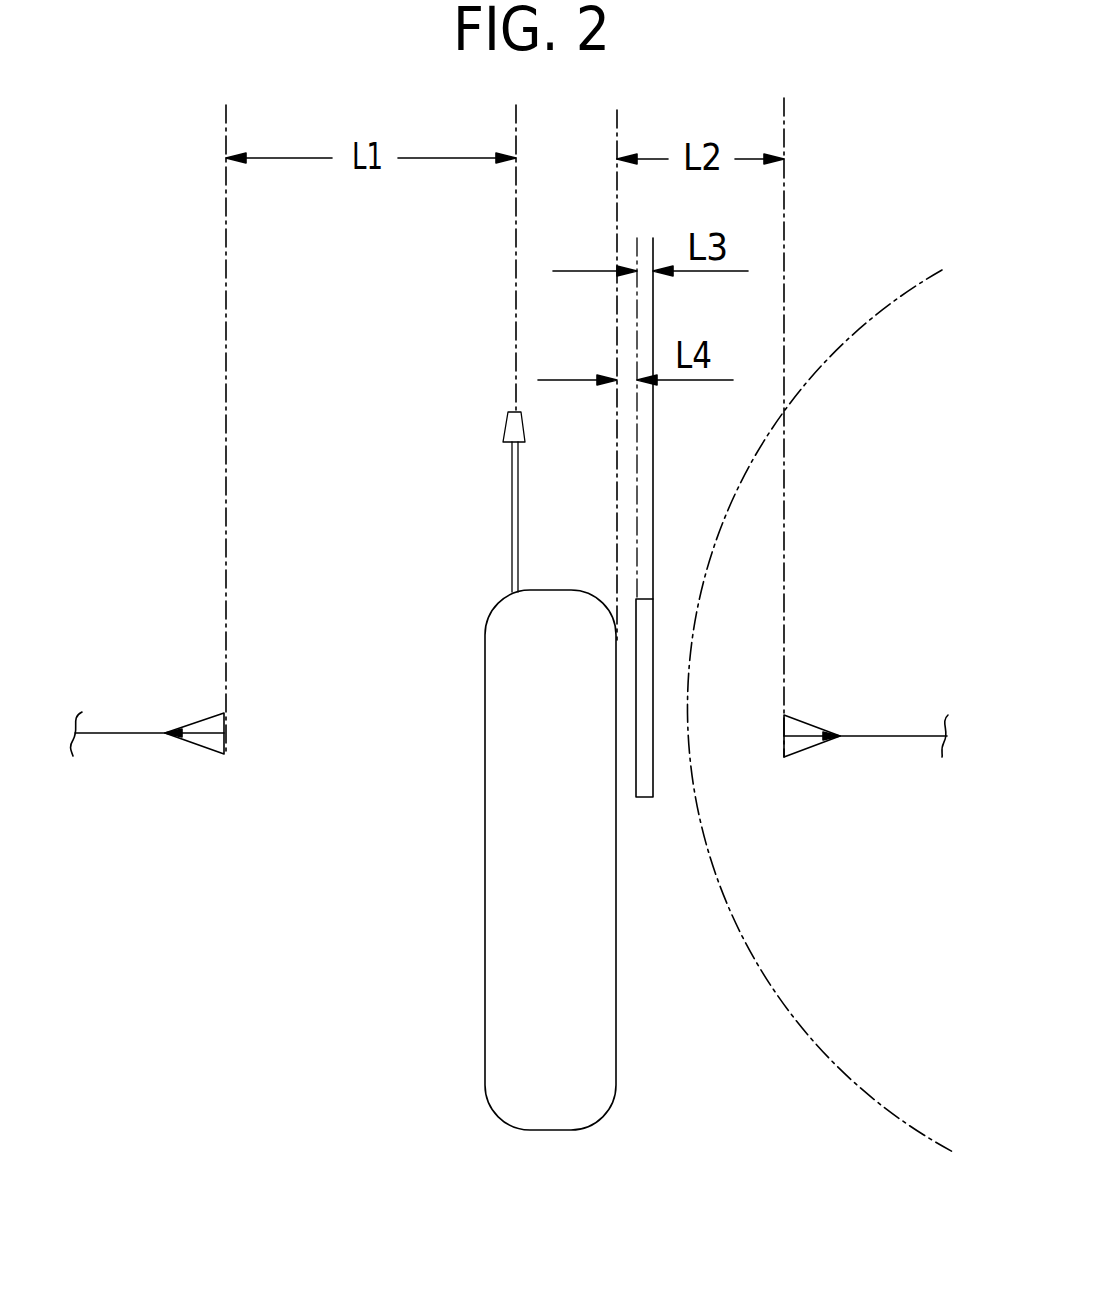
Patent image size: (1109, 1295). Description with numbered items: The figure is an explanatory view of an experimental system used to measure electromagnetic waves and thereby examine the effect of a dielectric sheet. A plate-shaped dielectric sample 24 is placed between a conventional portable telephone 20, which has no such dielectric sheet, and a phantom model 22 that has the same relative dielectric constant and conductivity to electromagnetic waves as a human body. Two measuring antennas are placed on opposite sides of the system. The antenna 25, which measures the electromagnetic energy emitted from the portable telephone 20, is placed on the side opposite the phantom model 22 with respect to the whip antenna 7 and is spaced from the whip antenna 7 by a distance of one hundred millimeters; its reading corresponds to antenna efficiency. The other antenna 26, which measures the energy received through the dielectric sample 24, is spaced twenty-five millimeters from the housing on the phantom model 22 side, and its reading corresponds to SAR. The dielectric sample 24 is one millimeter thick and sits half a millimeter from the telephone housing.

The whip antenna 7 is at (512, 501).
The portable telephone 20 is at (485, 845).
The phantom model 22 is at (795, 1038).
The dielectric sample 24 is at (644, 797).
The antenna 25 is at (133, 735).
The antenna 26 is at (877, 737).